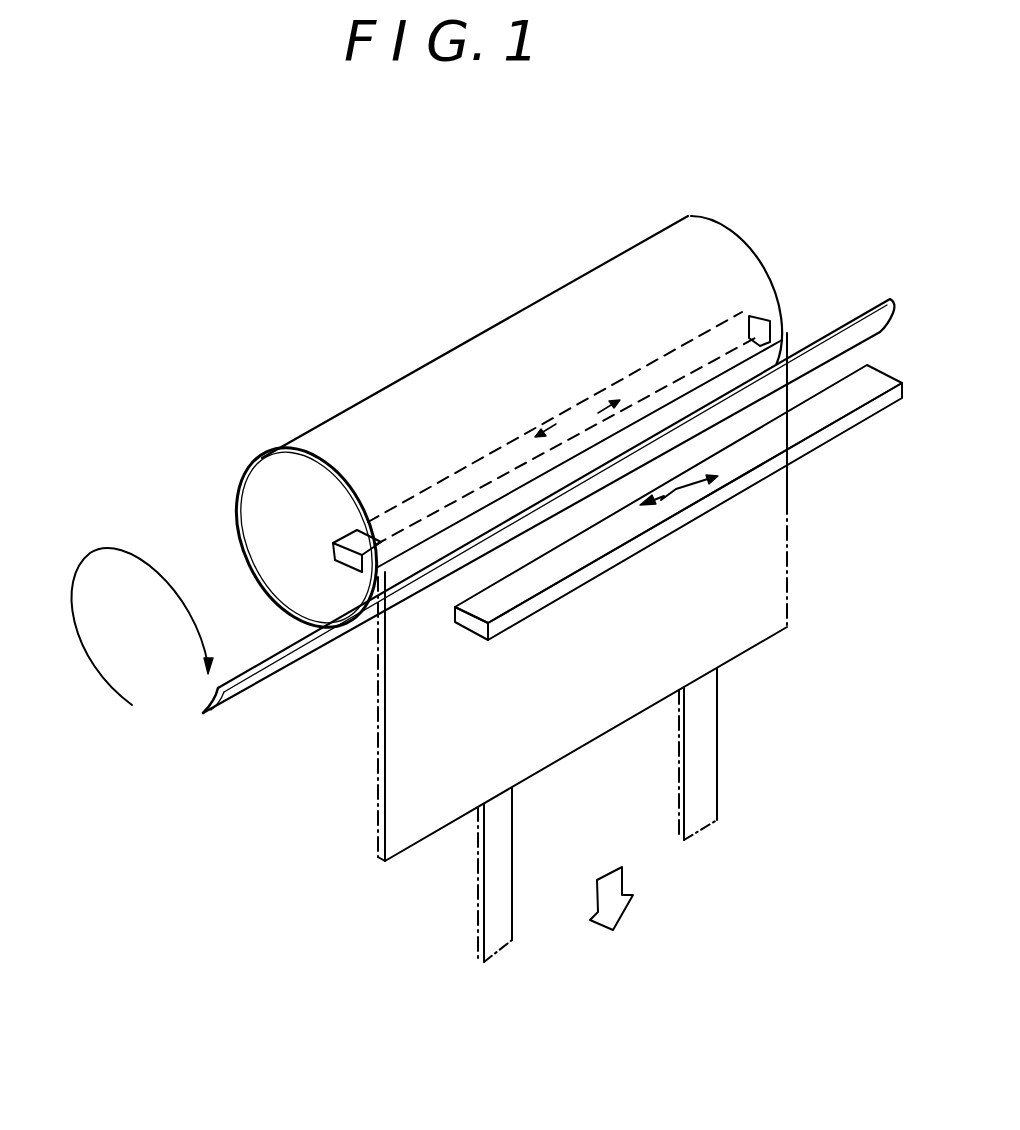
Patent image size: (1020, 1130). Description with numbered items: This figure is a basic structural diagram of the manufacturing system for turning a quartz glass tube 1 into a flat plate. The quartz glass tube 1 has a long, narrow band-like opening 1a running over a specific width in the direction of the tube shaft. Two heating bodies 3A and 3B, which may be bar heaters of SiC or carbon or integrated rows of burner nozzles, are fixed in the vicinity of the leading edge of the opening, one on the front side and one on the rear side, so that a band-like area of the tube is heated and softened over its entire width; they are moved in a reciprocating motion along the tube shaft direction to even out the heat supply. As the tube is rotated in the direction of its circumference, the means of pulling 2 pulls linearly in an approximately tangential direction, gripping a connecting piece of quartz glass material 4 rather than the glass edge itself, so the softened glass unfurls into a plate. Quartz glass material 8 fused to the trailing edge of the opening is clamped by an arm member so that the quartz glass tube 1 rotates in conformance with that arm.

The quartz glass tube 1 is at (283, 448).
The band-like opening 1a is at (436, 553).
The means of pulling 2 is at (627, 983).
The heating body 3A is at (858, 386).
The heating body 3B is at (771, 321).
The connecting piece of quartz glass material 4 is at (710, 750).
The quartz glass material 8 is at (845, 342).